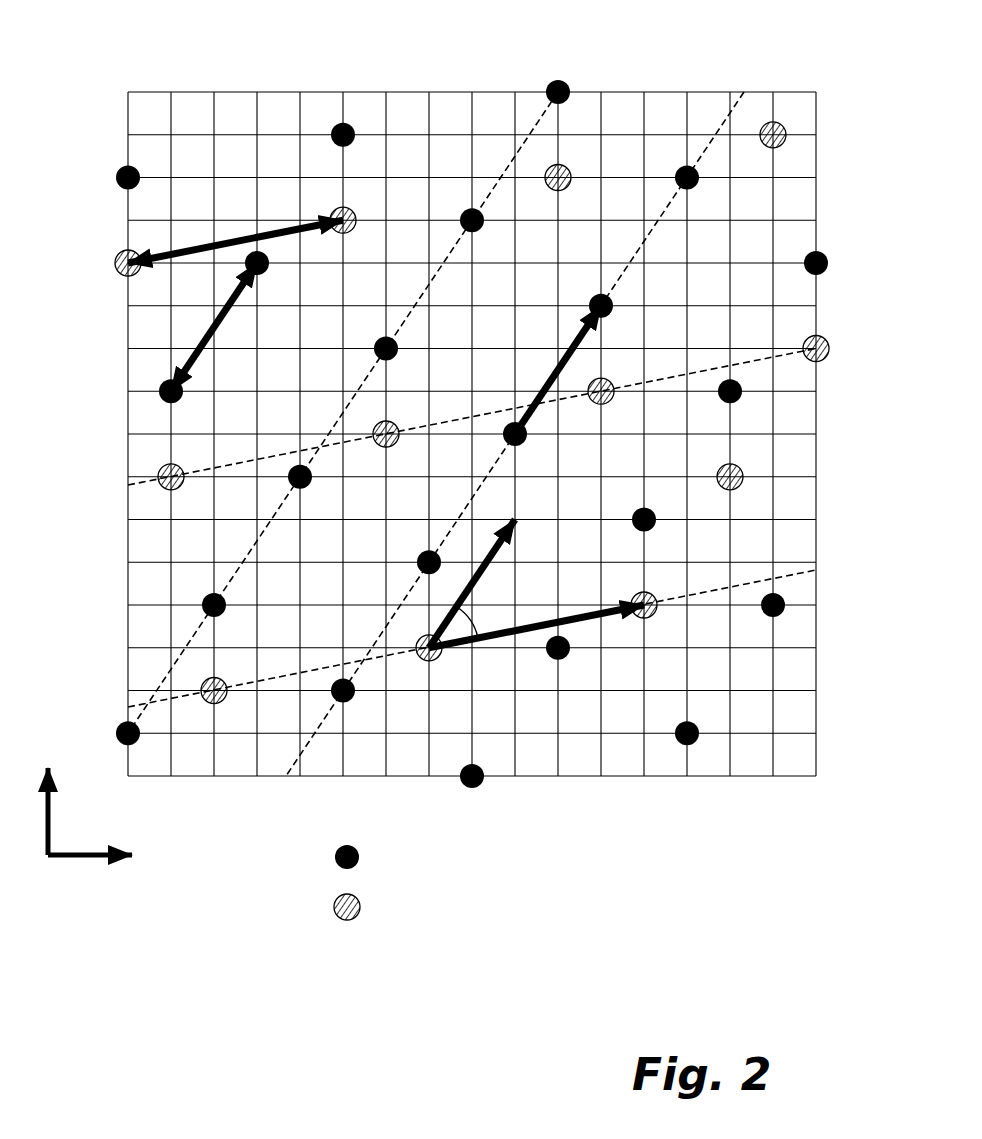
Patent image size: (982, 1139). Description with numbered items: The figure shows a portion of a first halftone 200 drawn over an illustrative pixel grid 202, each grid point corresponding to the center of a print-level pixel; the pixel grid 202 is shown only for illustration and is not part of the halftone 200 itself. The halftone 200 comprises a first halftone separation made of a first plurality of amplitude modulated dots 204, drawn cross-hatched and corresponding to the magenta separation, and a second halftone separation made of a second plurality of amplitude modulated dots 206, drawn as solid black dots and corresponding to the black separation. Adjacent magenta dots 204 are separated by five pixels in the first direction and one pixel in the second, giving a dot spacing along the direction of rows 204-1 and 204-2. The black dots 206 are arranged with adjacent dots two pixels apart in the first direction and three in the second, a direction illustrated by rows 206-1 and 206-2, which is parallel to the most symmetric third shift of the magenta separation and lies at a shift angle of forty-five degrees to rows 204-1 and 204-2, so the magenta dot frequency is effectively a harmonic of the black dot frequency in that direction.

The first halftone 200 is at (155, 908).
The pixel grid 202 is at (128, 122).
The first plurality of amplitude modulated dots 204 is at (116, 262).
The first row of the first halftone separation 204-1 is at (128, 706).
The second row of the first halftone separation 204-2 is at (128, 486).
The second plurality of amplitude modulated dots 206 is at (122, 176).
The first row of the second halftone separation 206-1 is at (563, 90).
The second row of the second halftone separation 206-2 is at (740, 92).